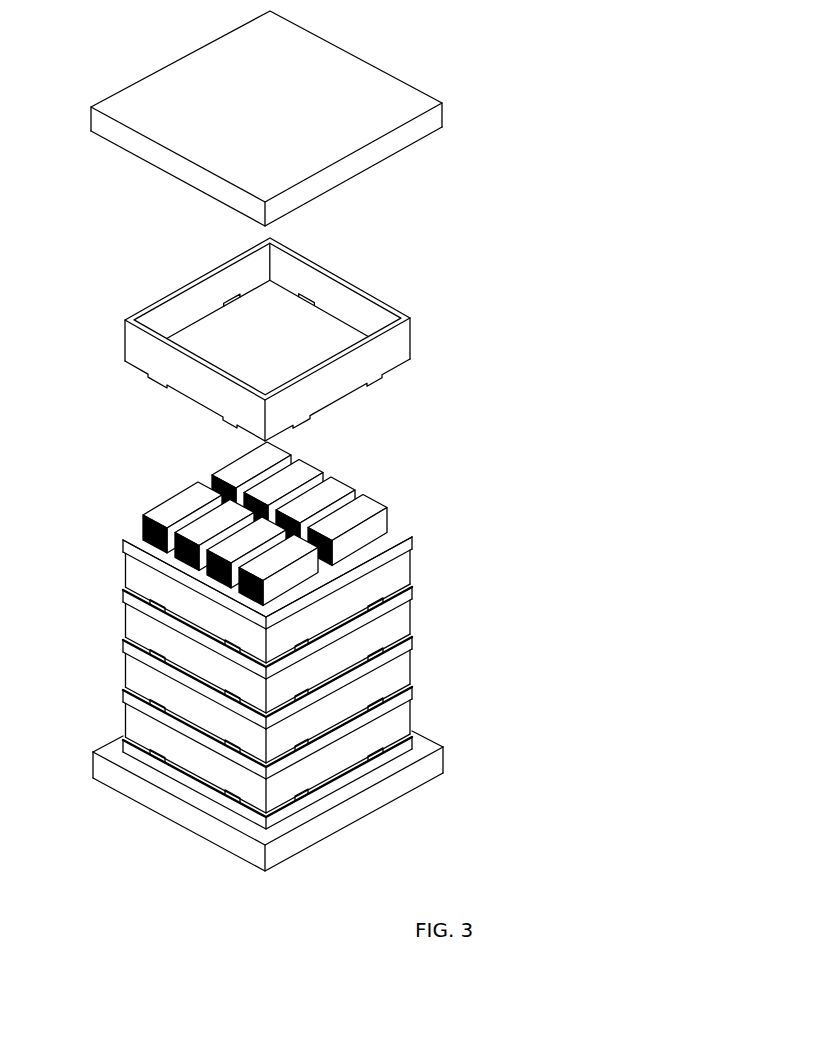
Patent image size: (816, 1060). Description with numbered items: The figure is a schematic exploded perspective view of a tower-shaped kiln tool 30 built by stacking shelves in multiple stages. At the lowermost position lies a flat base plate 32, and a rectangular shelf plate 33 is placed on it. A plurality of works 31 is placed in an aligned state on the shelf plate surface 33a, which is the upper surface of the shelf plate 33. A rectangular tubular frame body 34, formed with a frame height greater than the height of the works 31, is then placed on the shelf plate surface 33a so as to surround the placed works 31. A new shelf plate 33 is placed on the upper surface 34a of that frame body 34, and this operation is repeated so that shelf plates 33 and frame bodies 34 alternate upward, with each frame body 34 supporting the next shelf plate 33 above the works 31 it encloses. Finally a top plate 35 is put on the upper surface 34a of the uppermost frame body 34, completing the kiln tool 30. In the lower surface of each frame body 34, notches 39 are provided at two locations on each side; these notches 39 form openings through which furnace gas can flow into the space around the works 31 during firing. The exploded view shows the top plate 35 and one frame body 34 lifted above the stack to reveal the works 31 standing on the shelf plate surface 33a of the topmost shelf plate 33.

The kiln tool 30 is at (257, 441).
The works 31 is at (277, 457).
The base plate 32 is at (435, 763).
The shelf plate 33 is at (233, 664).
The shelf plate surface 33a is at (135, 536).
The frame body 34 is at (271, 527).
The upper surface of the frame body 34a is at (160, 308).
The top plate 35 is at (388, 88).
The notches 39 is at (243, 300).